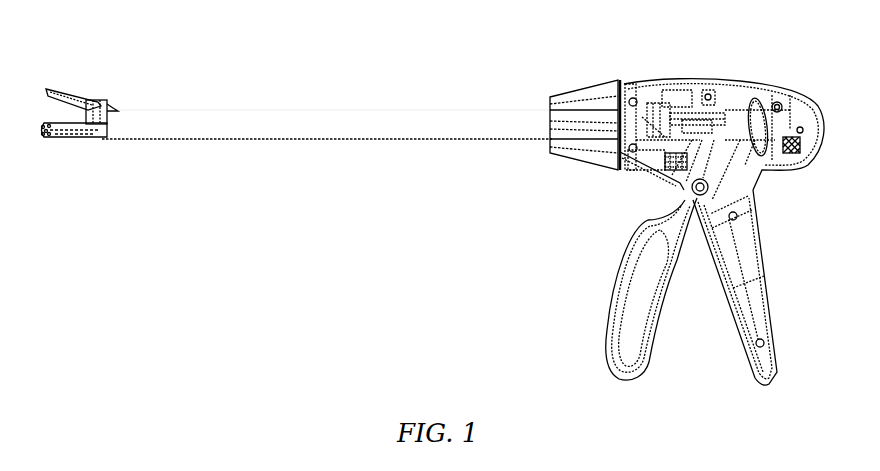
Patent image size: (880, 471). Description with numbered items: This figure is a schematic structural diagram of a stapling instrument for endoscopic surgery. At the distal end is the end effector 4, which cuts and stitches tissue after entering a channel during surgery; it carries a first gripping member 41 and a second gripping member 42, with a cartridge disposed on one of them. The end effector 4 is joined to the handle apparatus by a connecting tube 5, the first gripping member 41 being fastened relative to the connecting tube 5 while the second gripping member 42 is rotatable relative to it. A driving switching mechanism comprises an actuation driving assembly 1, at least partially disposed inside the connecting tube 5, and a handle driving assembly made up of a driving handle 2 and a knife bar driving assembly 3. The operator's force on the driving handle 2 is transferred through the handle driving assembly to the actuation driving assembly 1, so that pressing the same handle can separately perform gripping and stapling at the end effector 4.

The actuation driving assembly 1 is at (647, 153).
The driving handle 2 is at (602, 282).
The knife bar driving assembly 3 is at (772, 100).
The end effector 4 is at (116, 136).
The first gripping member 41 is at (70, 137).
The second gripping member 42 is at (77, 97).
The connecting tube 5 is at (335, 100).